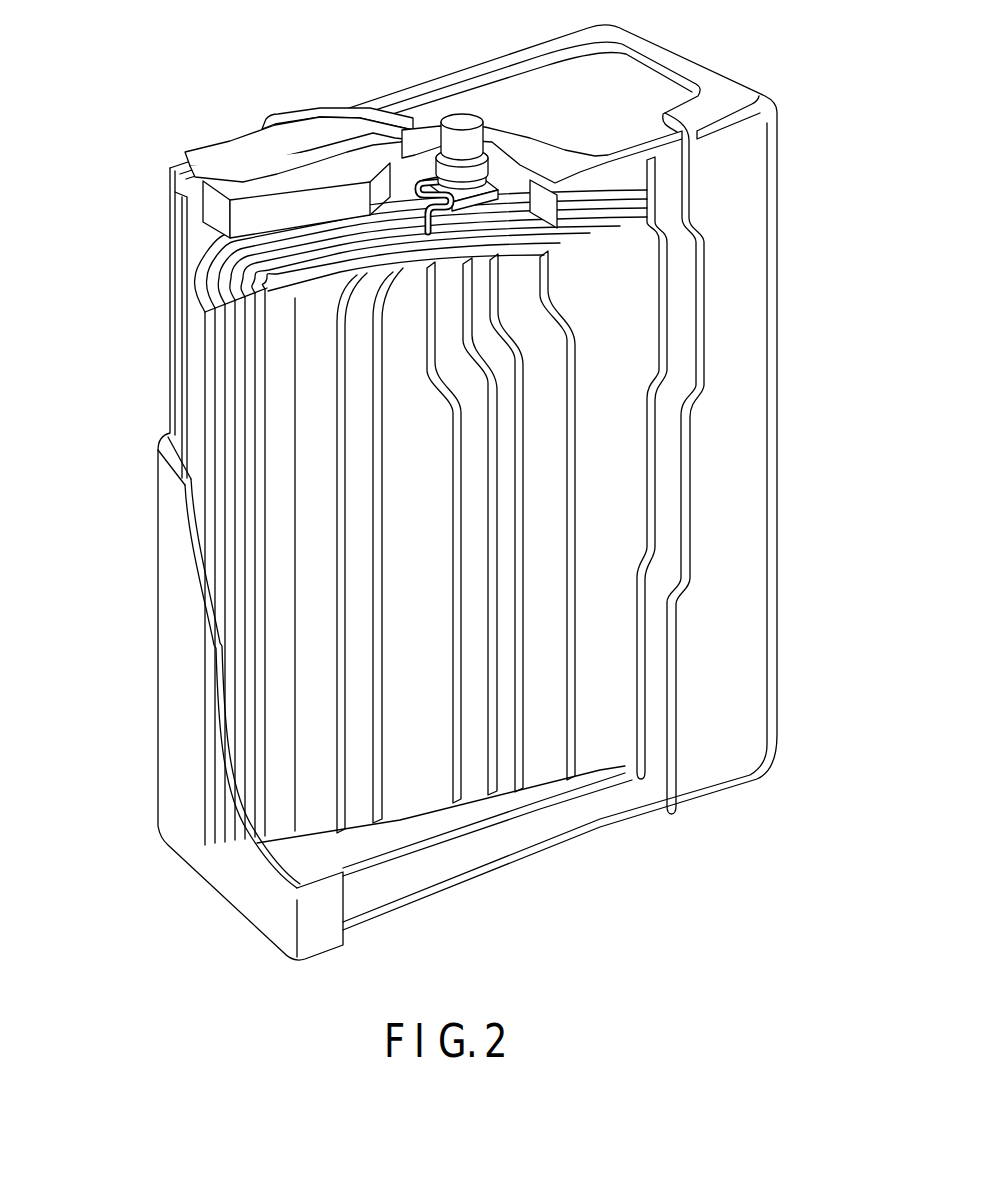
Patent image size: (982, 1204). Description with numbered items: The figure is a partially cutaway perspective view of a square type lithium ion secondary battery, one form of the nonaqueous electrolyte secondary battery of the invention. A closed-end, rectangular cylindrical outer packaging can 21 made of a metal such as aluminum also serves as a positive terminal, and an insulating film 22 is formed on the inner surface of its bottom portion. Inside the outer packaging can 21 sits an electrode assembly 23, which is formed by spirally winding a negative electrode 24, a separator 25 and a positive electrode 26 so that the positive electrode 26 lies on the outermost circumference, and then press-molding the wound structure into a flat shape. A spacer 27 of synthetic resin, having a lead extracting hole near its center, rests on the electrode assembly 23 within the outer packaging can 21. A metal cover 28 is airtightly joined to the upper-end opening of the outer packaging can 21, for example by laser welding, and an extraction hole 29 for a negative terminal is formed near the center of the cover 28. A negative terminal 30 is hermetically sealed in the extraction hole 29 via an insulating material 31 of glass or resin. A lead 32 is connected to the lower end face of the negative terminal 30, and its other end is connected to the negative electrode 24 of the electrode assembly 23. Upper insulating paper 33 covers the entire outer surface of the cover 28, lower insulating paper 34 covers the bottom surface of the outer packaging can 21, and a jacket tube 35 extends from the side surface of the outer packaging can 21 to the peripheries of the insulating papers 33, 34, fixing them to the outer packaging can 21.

The outer packaging can 21 is at (683, 328).
The insulating film 22 is at (420, 857).
The electrode assembly 23 is at (350, 517).
The negative electrode 24 is at (305, 570).
The separator 25 is at (352, 625).
The positive electrode 26 is at (400, 678).
The spacer 27 is at (210, 218).
The cover 28 is at (315, 157).
The extraction hole 29 is at (422, 148).
The negative terminal 30 is at (462, 117).
The insulating material 31 is at (483, 160).
The lead 32 is at (490, 202).
The upper insulating paper 33 is at (227, 145).
The lower insulating paper 34 is at (517, 857).
The jacket tube 35 is at (757, 718).